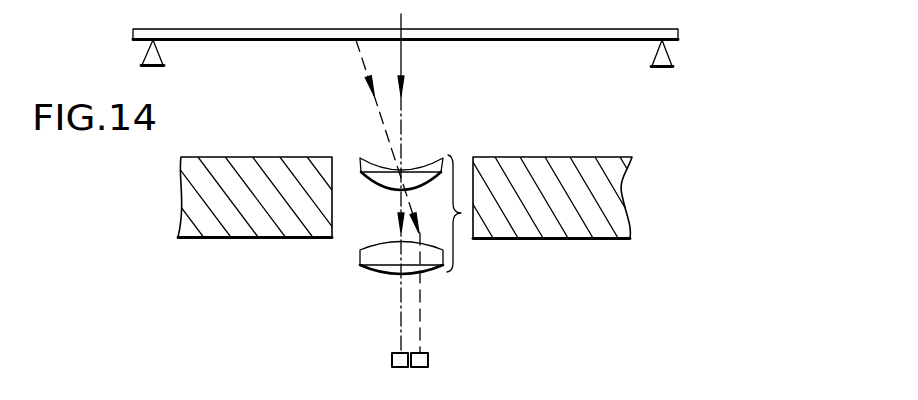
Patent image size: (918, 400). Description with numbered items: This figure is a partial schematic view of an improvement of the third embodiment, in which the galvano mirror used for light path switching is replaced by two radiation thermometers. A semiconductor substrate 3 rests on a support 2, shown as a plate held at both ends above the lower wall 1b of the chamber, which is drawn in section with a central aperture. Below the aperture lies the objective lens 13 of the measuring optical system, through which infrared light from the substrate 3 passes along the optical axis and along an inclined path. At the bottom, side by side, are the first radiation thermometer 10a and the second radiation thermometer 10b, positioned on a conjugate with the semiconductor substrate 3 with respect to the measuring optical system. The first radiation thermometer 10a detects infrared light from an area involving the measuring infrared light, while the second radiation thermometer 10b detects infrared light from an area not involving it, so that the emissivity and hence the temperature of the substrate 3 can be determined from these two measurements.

The lower wall 1b is at (222, 233).
The support 2 is at (654, 57).
The semiconductor substrate 3 is at (583, 31).
The objective lens 13 is at (461, 213).
The first radiation thermometer 10a is at (393, 353).
The second radiation thermometer 10b is at (428, 353).